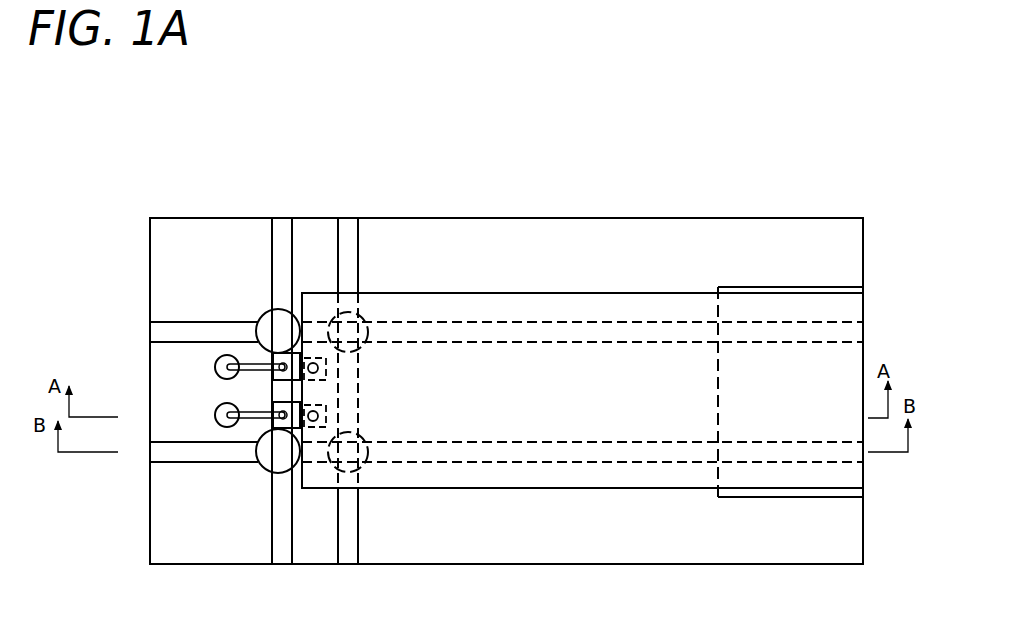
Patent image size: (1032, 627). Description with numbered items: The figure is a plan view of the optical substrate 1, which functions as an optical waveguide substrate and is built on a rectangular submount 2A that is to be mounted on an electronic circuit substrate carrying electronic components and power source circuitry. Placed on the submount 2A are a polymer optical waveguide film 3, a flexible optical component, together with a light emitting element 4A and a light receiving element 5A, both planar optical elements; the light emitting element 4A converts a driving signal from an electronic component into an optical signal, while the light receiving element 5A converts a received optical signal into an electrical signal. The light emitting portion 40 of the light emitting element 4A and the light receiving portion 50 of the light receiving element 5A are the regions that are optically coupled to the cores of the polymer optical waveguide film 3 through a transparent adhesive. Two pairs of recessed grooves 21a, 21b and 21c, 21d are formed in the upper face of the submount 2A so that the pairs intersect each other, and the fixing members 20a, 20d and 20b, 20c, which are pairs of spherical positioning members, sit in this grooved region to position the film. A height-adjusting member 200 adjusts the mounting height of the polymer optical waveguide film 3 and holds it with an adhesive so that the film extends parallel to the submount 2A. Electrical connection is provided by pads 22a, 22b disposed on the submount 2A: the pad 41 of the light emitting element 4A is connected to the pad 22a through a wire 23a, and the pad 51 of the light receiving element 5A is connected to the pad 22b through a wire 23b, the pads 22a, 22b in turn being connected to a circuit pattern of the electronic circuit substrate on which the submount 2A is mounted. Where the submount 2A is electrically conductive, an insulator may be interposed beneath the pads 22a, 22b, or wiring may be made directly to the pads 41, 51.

The optical substrate 1 is at (773, 108).
The submount 2A is at (562, 237).
The polymer optical waveguide film 3 is at (471, 282).
The height-adjusting member 200 is at (745, 287).
The fixing member 20a is at (262, 314).
The fixing member 20b is at (273, 460).
The fixing member 20c is at (360, 466).
The fixing member 20d is at (360, 318).
The groove 21a is at (273, 228).
The groove 21b is at (348, 232).
The groove 21c is at (160, 330).
The groove 21d is at (165, 452).
The pad 22a is at (215, 367).
The pad 22b is at (215, 415).
The wire 23a is at (286, 360).
The wire 23b is at (275, 420).
The light emitting portion 40 is at (313, 363).
The pad 41 is at (270, 372).
The light emitting element 4A is at (328, 368).
The light receiving portion 50 is at (313, 421).
The pad 51 is at (288, 405).
The light receiving element 5A is at (328, 417).